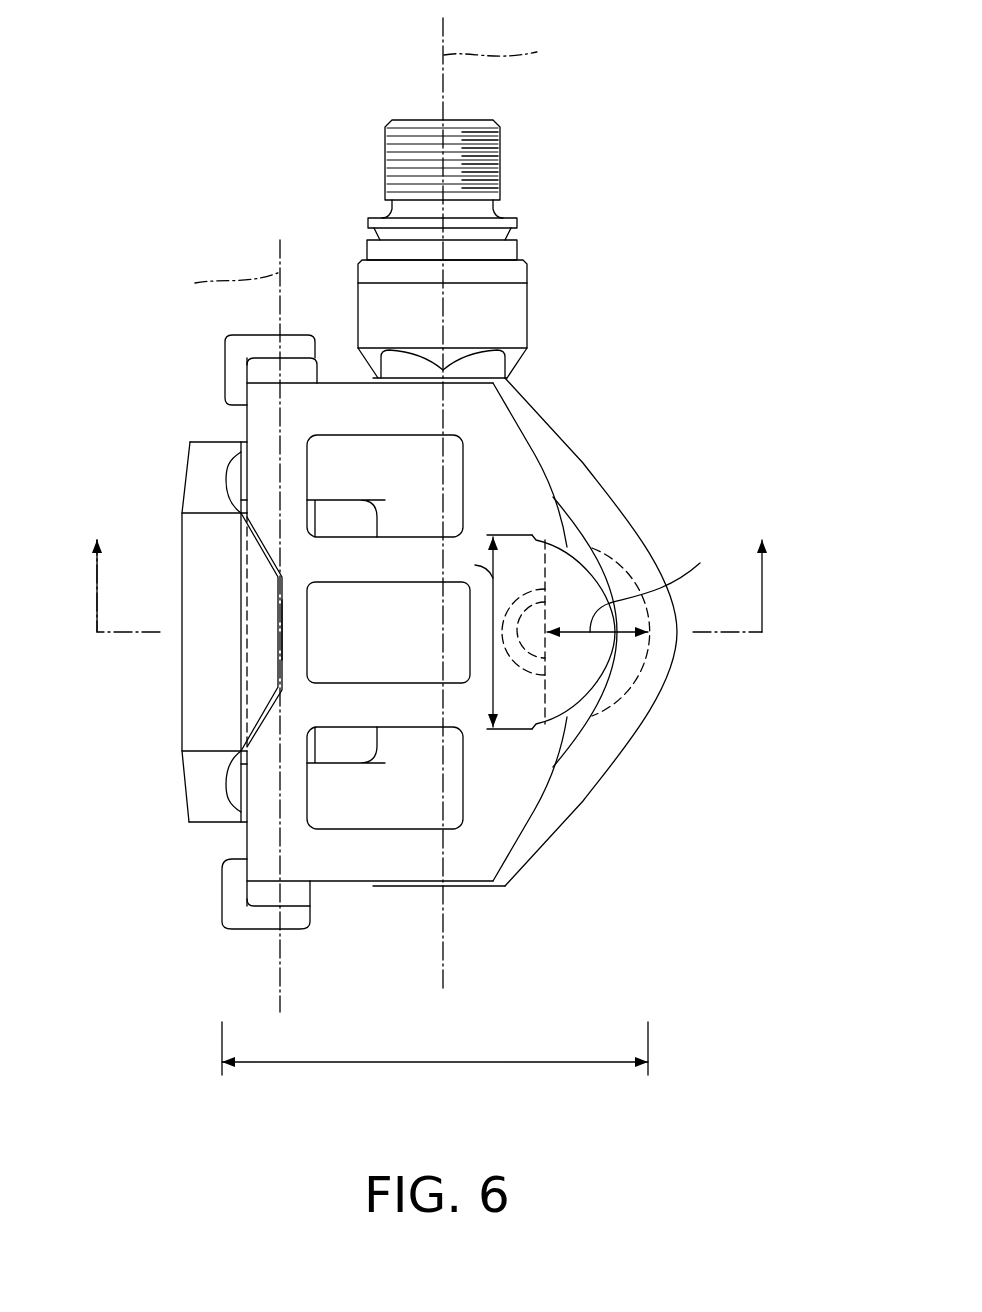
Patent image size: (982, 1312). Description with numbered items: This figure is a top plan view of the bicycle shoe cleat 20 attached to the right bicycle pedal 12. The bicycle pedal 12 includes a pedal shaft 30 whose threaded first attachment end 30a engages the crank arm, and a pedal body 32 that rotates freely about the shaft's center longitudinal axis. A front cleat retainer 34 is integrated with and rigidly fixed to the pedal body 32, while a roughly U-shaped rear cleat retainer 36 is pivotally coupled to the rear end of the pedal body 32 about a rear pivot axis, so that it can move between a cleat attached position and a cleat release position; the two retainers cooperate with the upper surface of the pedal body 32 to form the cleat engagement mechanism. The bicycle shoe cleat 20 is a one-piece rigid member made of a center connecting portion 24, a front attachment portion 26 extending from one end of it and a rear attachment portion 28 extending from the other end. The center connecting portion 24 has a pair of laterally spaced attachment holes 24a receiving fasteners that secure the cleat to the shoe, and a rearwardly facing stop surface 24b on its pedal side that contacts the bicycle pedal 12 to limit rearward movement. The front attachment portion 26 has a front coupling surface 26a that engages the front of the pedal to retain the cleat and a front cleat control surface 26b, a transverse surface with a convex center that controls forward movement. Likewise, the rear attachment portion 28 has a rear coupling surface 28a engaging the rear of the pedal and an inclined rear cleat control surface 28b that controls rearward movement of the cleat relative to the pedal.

The bicycle pedal 12 is at (702, 240).
The bicycle shoe cleat 20 is at (545, 461).
The center connecting portion 24 is at (383, 660).
The attachment holes 24a is at (415, 435).
The stop surface 24b is at (505, 650).
The front attachment portion 26 is at (650, 669).
The front coupling surface 26a is at (652, 652).
The front cleat control surface 26b is at (590, 572).
The rear attachment portion 28 is at (178, 712).
The rear coupling surface 28a is at (248, 642).
The rear cleat control surface 28b is at (282, 657).
The pedal shaft 30 is at (495, 249).
The first attachment end 30a is at (490, 150).
The pedal body 32 is at (550, 414).
The front cleat retainer 34 is at (624, 706).
The rear cleat retainer 36 is at (184, 474).